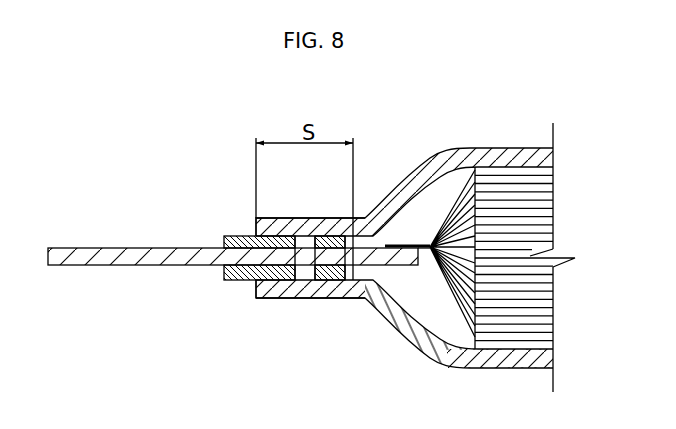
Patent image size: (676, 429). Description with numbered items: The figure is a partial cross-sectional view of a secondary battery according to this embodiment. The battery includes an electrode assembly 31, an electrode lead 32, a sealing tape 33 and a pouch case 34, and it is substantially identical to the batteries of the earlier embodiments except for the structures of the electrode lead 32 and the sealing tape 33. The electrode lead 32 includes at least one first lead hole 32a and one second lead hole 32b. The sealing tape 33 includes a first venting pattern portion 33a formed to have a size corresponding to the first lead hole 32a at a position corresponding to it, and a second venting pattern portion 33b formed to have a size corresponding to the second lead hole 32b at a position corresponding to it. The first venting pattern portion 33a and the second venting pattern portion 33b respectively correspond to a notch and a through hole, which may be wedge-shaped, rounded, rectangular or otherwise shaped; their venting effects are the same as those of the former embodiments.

The electrode assembly 31 is at (452, 305).
The electrode lead 32 is at (125, 252).
The first lead hole 32a is at (348, 280).
The second lead hole 32b is at (300, 280).
The sealing tape 33 is at (230, 236).
The first venting pattern portion 33a is at (348, 235).
The second venting pattern portion 33b is at (305, 235).
The pouch case 34 is at (498, 148).